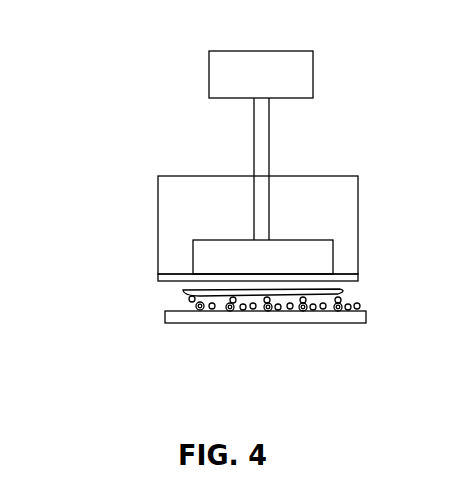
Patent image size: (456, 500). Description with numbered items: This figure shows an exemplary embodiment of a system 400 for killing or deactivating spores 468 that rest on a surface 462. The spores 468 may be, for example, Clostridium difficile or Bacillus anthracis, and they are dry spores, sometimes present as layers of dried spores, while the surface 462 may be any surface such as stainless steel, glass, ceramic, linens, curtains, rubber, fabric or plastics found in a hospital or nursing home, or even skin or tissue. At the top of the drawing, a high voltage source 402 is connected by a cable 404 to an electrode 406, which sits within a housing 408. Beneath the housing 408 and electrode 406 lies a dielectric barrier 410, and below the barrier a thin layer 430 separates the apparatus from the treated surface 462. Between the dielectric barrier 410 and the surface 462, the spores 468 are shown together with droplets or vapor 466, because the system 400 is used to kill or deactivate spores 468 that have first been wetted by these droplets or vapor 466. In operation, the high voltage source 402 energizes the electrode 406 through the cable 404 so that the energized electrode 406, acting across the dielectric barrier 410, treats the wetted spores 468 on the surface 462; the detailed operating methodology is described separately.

The system 400 is at (398, 76).
The high voltage source 402 is at (313, 51).
The cable 404 is at (269, 138).
The electrode 406 is at (333, 250).
The housing 408 is at (358, 205).
The dielectric barrier 410 is at (158, 278).
The bonding film 430 is at (183, 294).
The surface 462 is at (293, 323).
The droplets or vapor 466 is at (188, 302).
The spores 468 is at (228, 307).